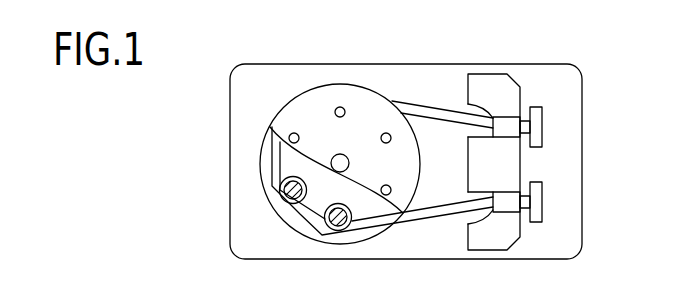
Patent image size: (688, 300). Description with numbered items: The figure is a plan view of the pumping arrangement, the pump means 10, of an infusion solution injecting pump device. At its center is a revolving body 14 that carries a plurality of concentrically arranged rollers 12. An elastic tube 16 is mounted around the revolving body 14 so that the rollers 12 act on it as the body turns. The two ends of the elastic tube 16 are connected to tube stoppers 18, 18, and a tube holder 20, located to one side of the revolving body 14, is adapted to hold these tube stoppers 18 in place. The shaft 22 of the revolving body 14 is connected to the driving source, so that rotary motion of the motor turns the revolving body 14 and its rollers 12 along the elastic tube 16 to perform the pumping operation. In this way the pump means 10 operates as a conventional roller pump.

The pump means 10 is at (224, 175).
The rollers 12 is at (333, 224).
The revolving body 14 is at (316, 120).
The elastic tube 16 is at (425, 215).
The tube stoppers 18 is at (537, 122).
The tube holder 20 is at (498, 98).
The shaft 22 is at (343, 162).